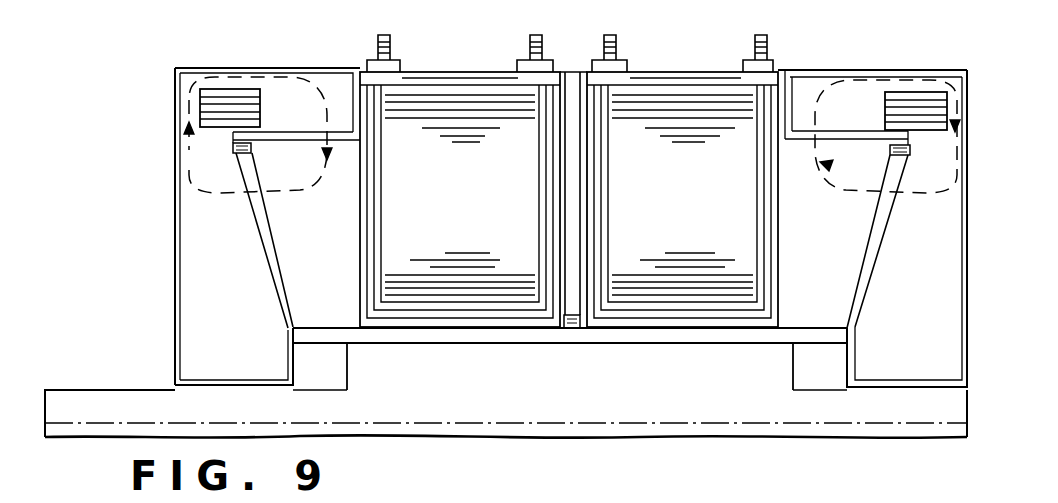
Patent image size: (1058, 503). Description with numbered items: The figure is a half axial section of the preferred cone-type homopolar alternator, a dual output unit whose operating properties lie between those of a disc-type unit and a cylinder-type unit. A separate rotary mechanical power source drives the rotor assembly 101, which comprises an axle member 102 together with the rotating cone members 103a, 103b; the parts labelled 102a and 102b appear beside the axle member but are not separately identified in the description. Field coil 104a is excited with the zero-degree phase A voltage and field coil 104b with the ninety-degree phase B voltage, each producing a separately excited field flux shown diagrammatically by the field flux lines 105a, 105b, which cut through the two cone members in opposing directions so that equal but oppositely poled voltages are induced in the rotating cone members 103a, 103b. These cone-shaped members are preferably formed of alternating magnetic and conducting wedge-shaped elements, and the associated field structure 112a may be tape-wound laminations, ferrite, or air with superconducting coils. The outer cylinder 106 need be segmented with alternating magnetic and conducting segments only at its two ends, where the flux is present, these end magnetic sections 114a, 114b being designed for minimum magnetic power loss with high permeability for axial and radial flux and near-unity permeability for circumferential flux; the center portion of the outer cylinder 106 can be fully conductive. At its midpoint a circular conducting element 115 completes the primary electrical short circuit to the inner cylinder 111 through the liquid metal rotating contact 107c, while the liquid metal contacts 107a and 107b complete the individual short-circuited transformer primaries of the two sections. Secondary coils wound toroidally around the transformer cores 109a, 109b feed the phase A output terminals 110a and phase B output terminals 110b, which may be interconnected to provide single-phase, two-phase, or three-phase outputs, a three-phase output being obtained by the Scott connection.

The rotor assembly 101 is at (172, 388).
The axle member 102 is at (520, 418).
The base block 102a is at (340, 368).
The base block 102b is at (830, 360).
The rotating cone member 103a is at (288, 302).
The rotating cone member 103b is at (860, 279).
The field coil 104a is at (188, 92).
The field coil 104b is at (978, 49).
The field flux lines 105a is at (299, 34).
The field flux lines 105b is at (900, 90).
The outer cylinder 106 is at (786, 66).
The liquid metal rotating contact 107a is at (236, 150).
The liquid metal rotating contact 107b is at (898, 158).
The liquid metal rotating contact 107c is at (572, 328).
The transformer core 109a is at (472, 212).
The transformer core 109b is at (702, 220).
The output terminals 110a is at (530, 42).
The output terminals 110b is at (757, 42).
The inner cylinder 111 is at (712, 345).
The field structure 112a is at (177, 330).
The end magnetic section 114a is at (359, 212).
The end magnetic section 114b is at (851, 212).
The circular conducting element 115 is at (575, 168).